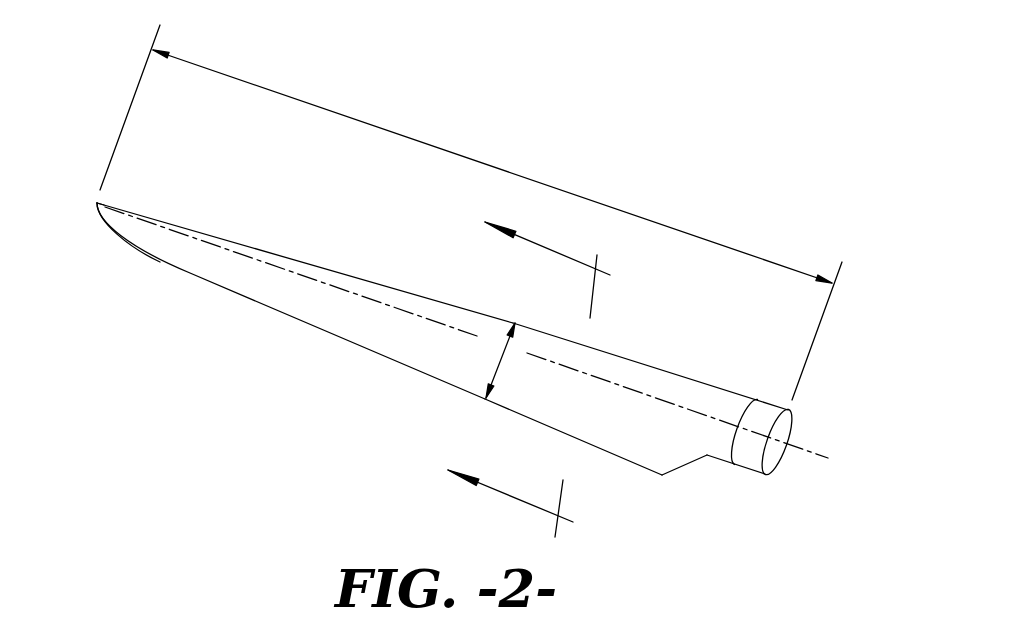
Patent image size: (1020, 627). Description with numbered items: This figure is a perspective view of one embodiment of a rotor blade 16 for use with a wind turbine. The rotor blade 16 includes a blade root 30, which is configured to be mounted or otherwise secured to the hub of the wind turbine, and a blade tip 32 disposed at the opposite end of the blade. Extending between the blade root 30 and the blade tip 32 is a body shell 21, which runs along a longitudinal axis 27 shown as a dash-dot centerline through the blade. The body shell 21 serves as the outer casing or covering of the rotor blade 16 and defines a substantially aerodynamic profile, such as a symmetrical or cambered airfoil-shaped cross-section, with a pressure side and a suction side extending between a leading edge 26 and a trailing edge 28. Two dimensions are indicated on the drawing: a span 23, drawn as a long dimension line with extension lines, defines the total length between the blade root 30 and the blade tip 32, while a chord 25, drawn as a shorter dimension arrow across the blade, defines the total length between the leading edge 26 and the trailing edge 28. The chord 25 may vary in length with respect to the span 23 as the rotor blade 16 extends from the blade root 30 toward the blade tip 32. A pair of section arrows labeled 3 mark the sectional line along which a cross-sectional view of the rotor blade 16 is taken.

The rotor blade 16 is at (442, 315).
The body shell 21 is at (317, 302).
The span 23 is at (398, 133).
The chord 25 is at (495, 360).
The leading edge 26 is at (640, 361).
The longitudinal axis 27 is at (97, 201).
The trailing edge 28 is at (621, 458).
The blade root 30 is at (752, 455).
The blade tip 32 is at (96, 201).
The sectional line 3- 3 is at (522, 361).